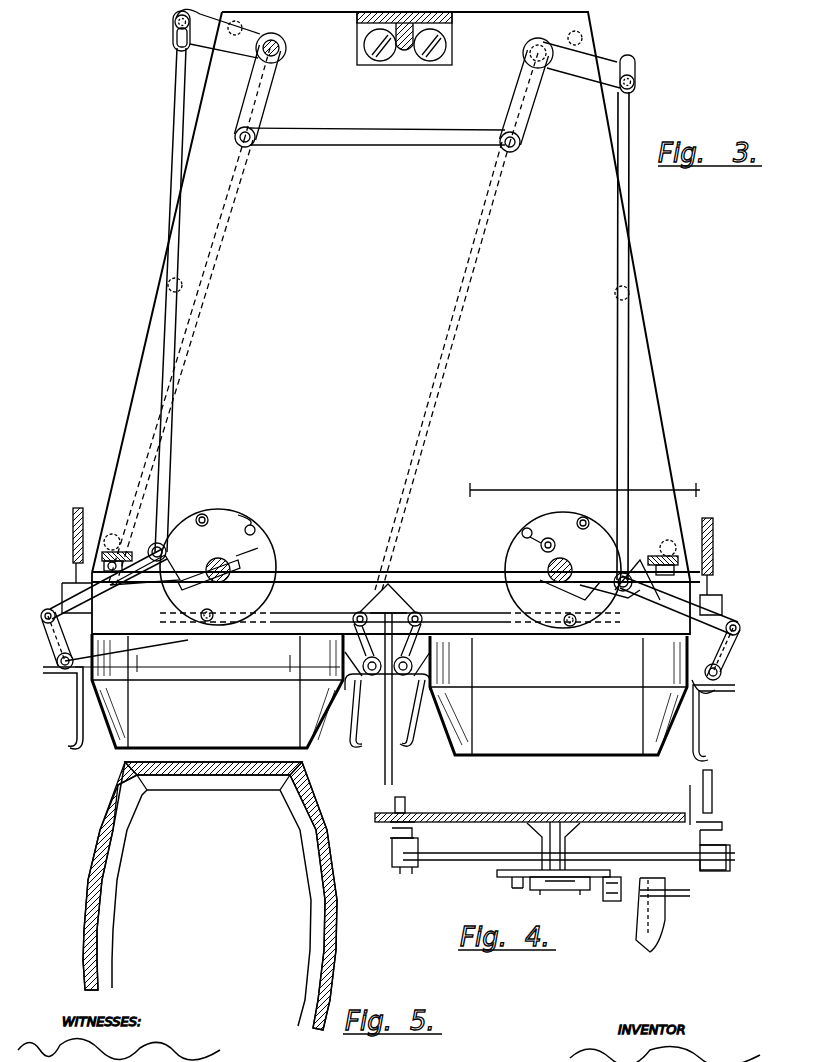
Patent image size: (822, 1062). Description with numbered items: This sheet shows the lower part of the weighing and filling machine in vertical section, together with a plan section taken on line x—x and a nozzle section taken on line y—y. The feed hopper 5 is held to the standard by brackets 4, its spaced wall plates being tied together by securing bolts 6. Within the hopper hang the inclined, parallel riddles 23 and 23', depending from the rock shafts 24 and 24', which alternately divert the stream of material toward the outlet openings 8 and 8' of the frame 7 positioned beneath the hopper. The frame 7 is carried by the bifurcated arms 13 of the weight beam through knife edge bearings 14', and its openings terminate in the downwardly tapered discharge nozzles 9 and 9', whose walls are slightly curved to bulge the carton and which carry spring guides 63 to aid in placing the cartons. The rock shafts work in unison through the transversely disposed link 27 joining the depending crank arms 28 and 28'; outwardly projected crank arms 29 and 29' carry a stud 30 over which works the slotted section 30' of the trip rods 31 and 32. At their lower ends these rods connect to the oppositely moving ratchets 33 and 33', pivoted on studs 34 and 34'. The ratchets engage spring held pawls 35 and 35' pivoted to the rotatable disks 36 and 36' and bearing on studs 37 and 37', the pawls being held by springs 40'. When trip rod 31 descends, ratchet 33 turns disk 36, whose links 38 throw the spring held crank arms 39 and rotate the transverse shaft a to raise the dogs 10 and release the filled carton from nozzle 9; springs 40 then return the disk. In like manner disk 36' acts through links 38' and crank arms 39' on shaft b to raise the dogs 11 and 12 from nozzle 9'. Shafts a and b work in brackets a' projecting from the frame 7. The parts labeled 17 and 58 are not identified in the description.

In FIG. 3, the brackets 4 is at (450, 18).
In FIG. 3, the feed hopper 5 is at (391, 296).
In FIG. 4, the feed hopper 5 is at (522, 822).
In FIG. 3, the securing bolts 6 is at (170, 290).
In FIG. 3, the frame 7 is at (391, 603).
In FIG. 3, the outlet opening 8 is at (396, 572).
In FIG. 3, the outlet opening 8' is at (390, 589).
In FIG. 3, the discharge nozzle 9 is at (209, 691).
In FIG. 5, the discharge nozzle 9 is at (210, 896).
In FIG. 3, the discharge nozzle 9' is at (558, 695).
In FIG. 3, the spring controlled dog 10 is at (352, 705).
In FIG. 3, the dog 11 is at (420, 662).
In FIG. 3, the dog 12 is at (714, 723).
In FIG. 3, the bifurcated arms 13 is at (72, 545).
In FIG. 3, the knife edge bearings 14' is at (407, 588).
In FIG. 3, the central bar 17 is at (392, 783).
In FIG. 3, the riddle 23 is at (180, 361).
In FIG. 3, the riddle 23' is at (449, 366).
In FIG. 3, the rock shaft 24 is at (287, 40).
In FIG. 3, the rock shaft 24' is at (520, 43).
In FIG. 3, the transversely disposed link 27 is at (372, 135).
In FIG. 3, the crank arm 28 is at (267, 96).
In FIG. 3, the crank arm 28' is at (534, 101).
In FIG. 3, the outwardly projected crank arm 29 is at (194, 31).
In FIG. 3, the outwardly projected crank arm 29' is at (586, 52).
In FIG. 3, the stud 30 is at (399, 52).
In FIG. 3, the slotted section 30' is at (403, 52).
In FIG. 3, the trip rod 31 is at (175, 215).
In FIG. 3, the trip rod 32 is at (632, 222).
In FIG. 4, the trip rod 32 is at (630, 905).
In FIG. 3, the ratchet 33 is at (385, 577).
In FIG. 3, the ratchet 33' is at (620, 601).
In FIG. 4, the ratchet 33' is at (621, 900).
In FIG. 3, the stud 34 is at (122, 542).
In FIG. 3, the stud 34' is at (703, 569).
In FIG. 4, the stud 34' is at (679, 893).
In FIG. 3, the spring held pawl 35 is at (387, 562).
In FIG. 4, the spring held pawl 35' is at (560, 896).
In FIG. 3, the rotatable disk 36 is at (218, 557).
In FIG. 3, the rotatable disk 36' is at (563, 558).
In FIG. 4, the rotatable disk 36' is at (537, 864).
In FIG. 3, the stud 37 is at (218, 567).
In FIG. 3, the stud 37' is at (570, 594).
In FIG. 3, the links 38 is at (245, 607).
In FIG. 3, the links 38' is at (607, 607).
In FIG. 4, the links 38' is at (569, 859).
In FIG. 3, the spring held crank arm 39 is at (213, 614).
In FIG. 3, the spring held crank arm 39' is at (586, 617).
In FIG. 4, the spring held crank arm 39' is at (573, 860).
In FIG. 4, the springs 40 is at (558, 832).
In FIG. 3, the springs 40' is at (396, 520).
In FIG. 4, the springs 40' is at (511, 895).
In FIG. 3, the bar 58 is at (50, 608).
In FIG. 3, the spring guides 63 is at (78, 742).
In FIG. 3, the transverse shaft a is at (48, 708).
In FIG. 3, the brackets a' is at (390, 641).
In FIG. 3, the transverse shaft b is at (735, 676).
In FIG. 4, the transverse shaft b is at (406, 804).
In FIG. 3, the section line x is at (579, 490).
In FIG. 3, the section line y is at (214, 667).